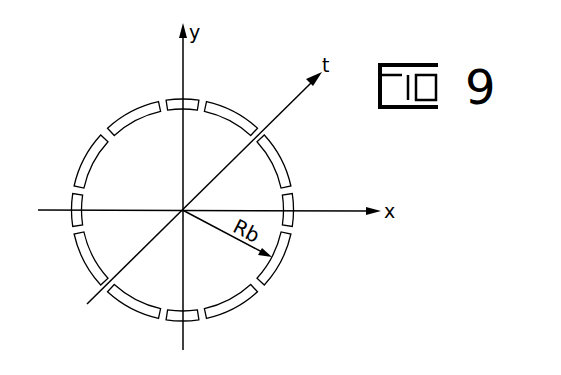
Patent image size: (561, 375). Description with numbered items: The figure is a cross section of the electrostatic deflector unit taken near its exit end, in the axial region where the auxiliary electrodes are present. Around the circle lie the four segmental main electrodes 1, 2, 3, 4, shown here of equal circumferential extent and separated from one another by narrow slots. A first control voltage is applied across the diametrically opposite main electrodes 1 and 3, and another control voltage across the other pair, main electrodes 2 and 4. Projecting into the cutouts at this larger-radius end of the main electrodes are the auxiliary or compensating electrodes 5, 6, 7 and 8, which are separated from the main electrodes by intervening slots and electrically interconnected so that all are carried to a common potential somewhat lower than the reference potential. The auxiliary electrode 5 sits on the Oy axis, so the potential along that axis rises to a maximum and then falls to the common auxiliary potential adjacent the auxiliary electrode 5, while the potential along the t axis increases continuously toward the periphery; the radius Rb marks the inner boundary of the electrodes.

The main electrode 1 is at (127, 117).
The main electrode 2 is at (285, 177).
The main electrode 3 is at (140, 310).
The main electrode 4 is at (90, 157).
The auxiliary electrode 5 is at (177, 100).
The auxiliary electrode 6 is at (293, 223).
The auxiliary electrode 7 is at (195, 317).
The auxiliary electrode 8 is at (73, 200).